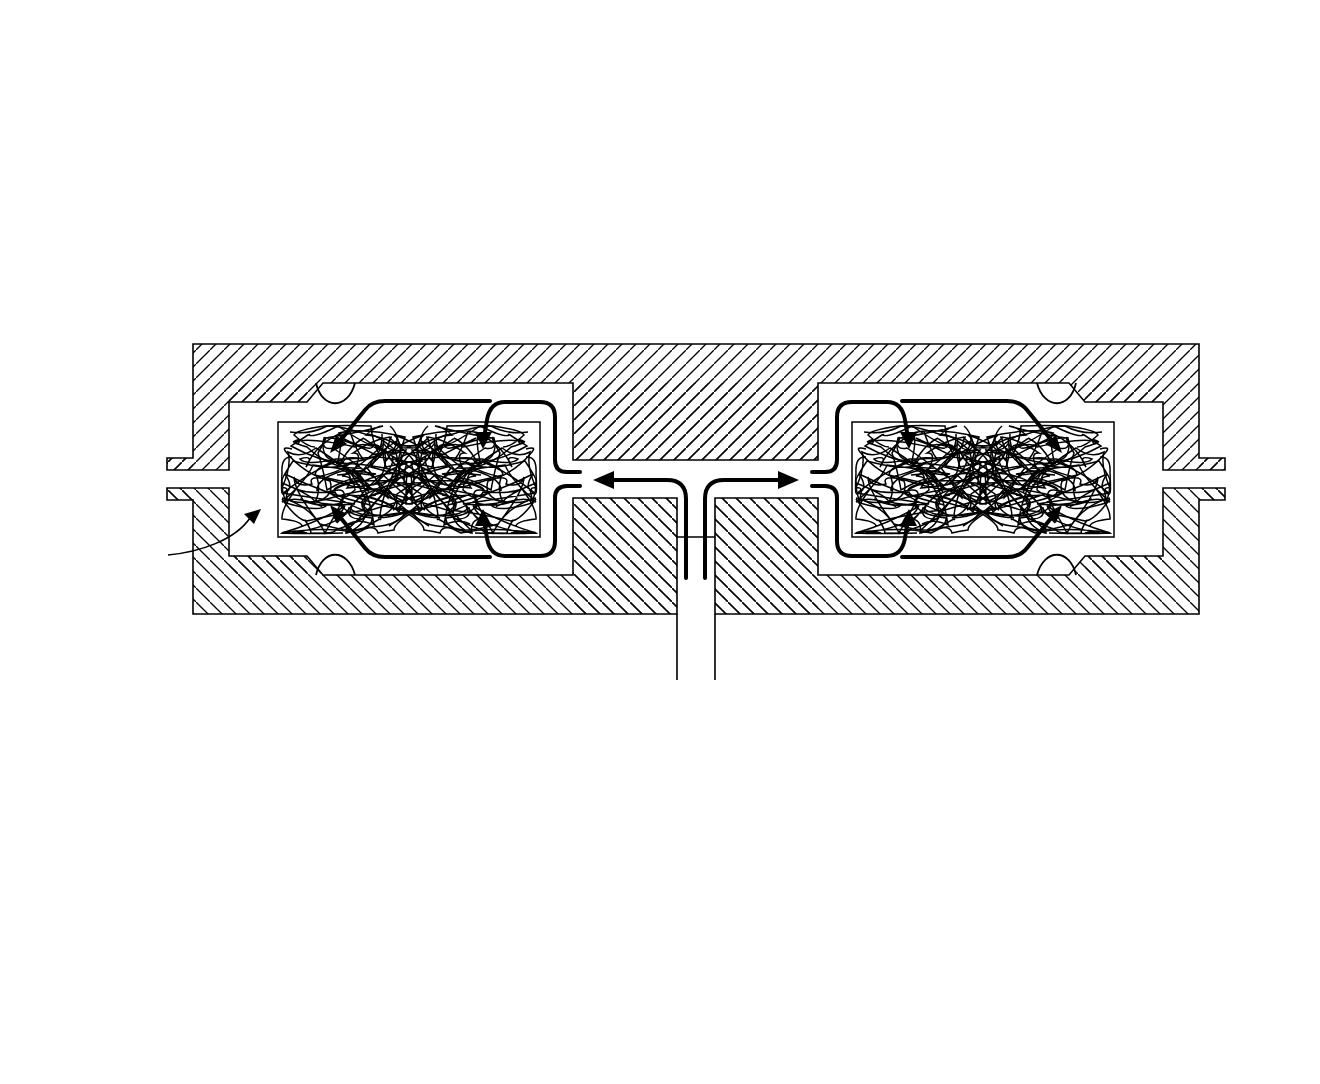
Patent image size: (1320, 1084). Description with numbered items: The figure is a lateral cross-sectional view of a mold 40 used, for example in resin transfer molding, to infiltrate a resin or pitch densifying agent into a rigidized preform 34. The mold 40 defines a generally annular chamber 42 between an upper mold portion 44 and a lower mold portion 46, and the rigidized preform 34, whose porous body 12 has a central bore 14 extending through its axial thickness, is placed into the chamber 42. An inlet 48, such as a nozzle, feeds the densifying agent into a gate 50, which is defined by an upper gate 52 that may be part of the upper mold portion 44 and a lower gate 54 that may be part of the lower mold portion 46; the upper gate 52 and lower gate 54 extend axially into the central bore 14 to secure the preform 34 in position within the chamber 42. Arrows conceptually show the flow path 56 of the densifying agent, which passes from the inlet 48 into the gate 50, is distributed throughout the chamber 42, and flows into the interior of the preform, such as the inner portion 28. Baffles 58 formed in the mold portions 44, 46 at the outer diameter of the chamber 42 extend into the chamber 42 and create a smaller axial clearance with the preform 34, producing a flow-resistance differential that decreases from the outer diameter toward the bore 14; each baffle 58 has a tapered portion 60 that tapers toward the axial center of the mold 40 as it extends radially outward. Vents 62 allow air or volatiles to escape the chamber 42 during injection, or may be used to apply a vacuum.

The porous body 12 is at (1113, 465).
The central bore 14 is at (827, 430).
The inner portion 28 is at (393, 467).
The rigidized preform 34 is at (194, 539).
The mold 40 is at (694, 527).
The chamber 42 is at (694, 473).
The upper mold portion 44 is at (914, 357).
The lower mold portion 46 is at (497, 593).
The inlet 48 is at (695, 633).
The gate 50 is at (688, 466).
The upper gate 52 is at (727, 420).
The lower gate 54 is at (753, 563).
The flow path 56 is at (640, 478).
The baffles 58 is at (265, 388).
The tapered portion 60 is at (333, 400).
The vents 62 is at (175, 480).